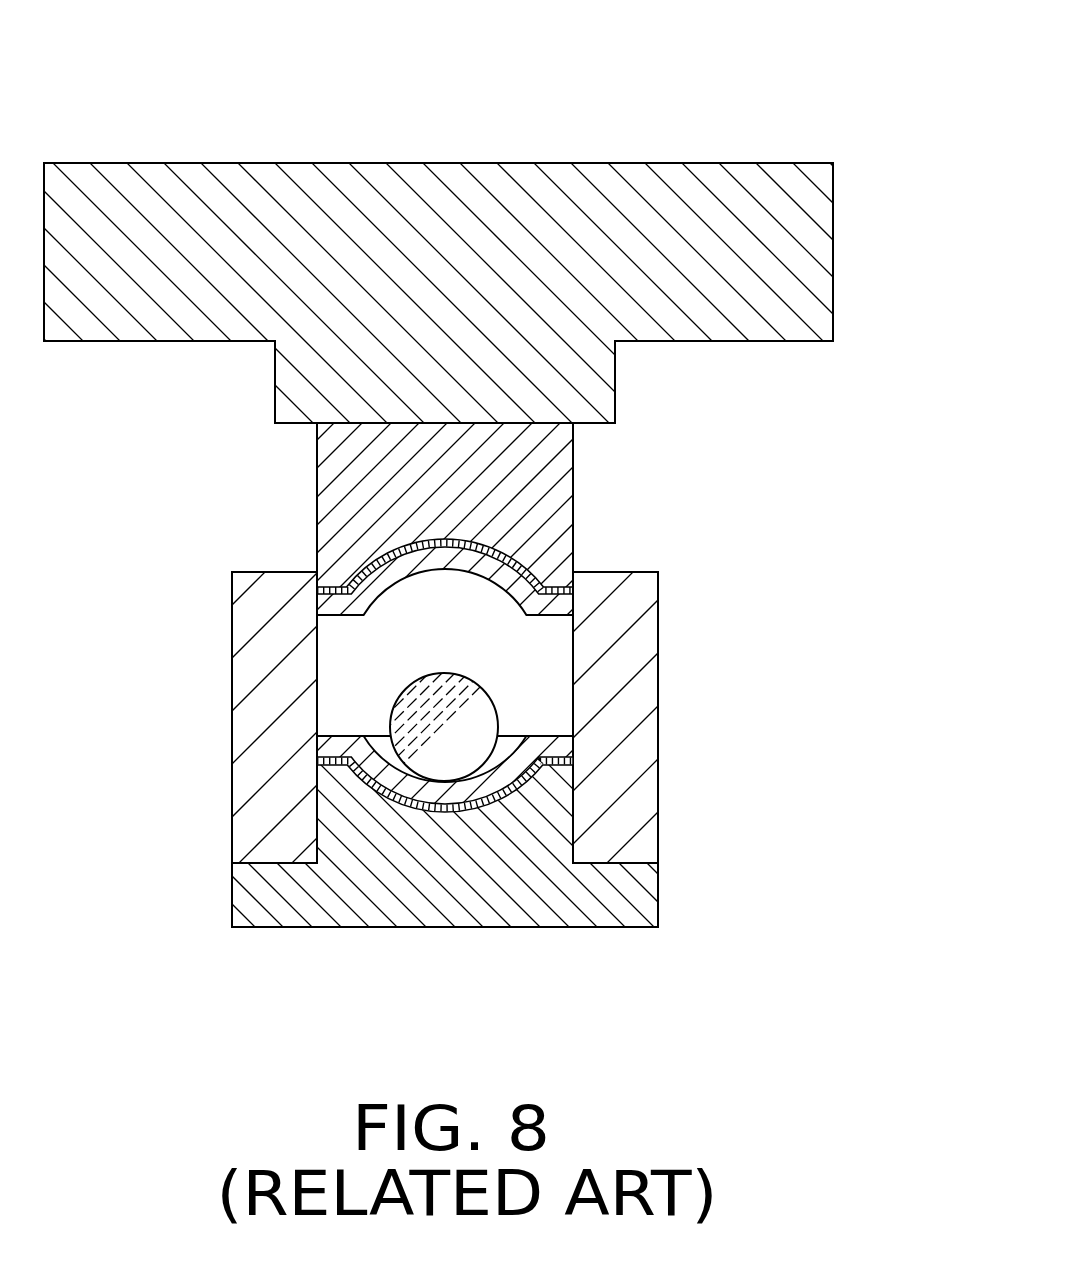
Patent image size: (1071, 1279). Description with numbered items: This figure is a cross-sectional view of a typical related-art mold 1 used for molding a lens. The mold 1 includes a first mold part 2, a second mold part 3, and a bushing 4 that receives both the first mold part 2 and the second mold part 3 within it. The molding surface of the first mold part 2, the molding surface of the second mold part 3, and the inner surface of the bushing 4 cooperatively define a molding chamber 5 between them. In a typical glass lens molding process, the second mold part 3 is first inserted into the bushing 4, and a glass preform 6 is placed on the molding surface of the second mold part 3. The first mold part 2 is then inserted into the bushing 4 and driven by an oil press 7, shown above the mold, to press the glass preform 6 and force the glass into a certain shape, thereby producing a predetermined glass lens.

The mold 1 is at (513, 108).
The first mold part 2 is at (548, 473).
The second mold part 3 is at (627, 900).
The bushing 4 is at (630, 702).
The molding chamber 5 is at (358, 643).
The glass preform 6 is at (430, 718).
The oil press 7 is at (792, 256).